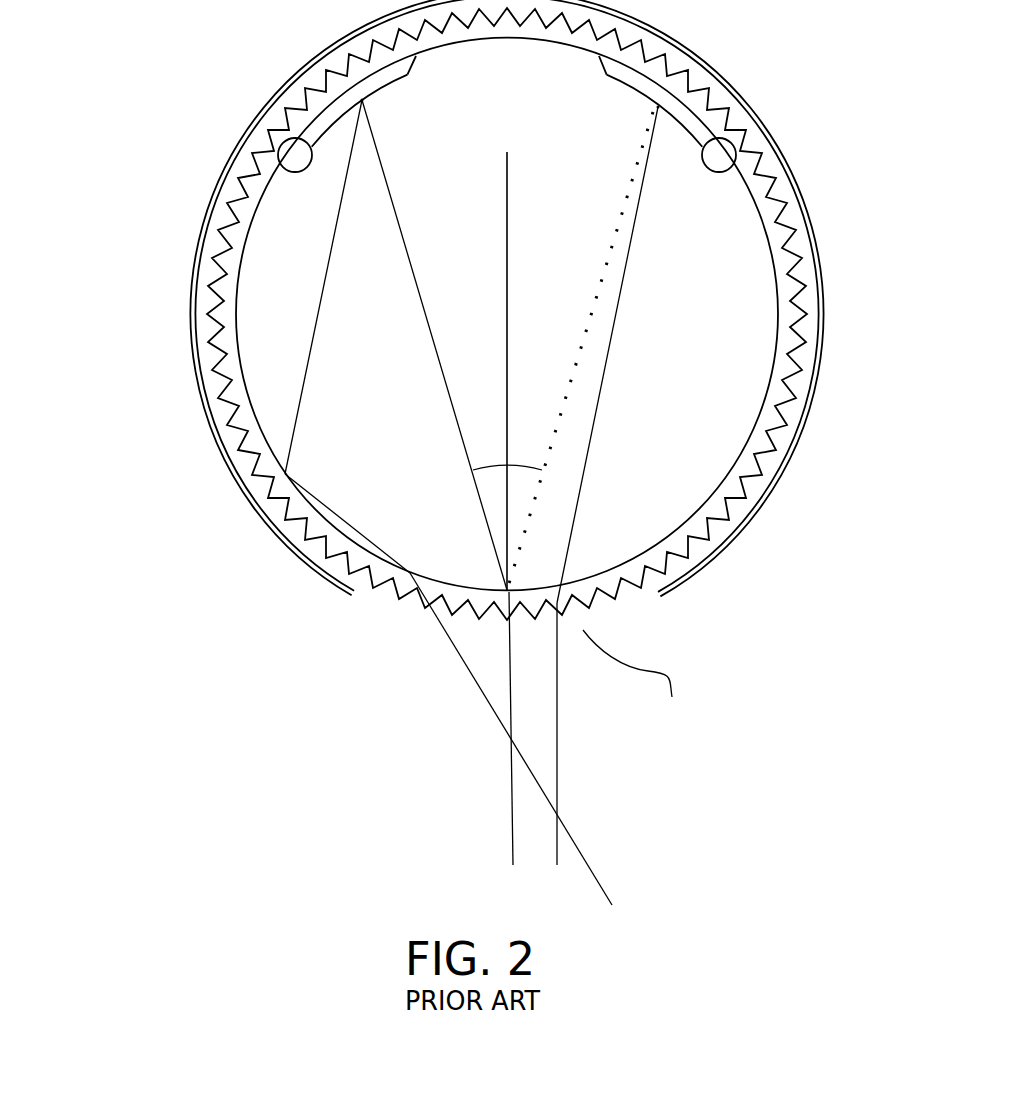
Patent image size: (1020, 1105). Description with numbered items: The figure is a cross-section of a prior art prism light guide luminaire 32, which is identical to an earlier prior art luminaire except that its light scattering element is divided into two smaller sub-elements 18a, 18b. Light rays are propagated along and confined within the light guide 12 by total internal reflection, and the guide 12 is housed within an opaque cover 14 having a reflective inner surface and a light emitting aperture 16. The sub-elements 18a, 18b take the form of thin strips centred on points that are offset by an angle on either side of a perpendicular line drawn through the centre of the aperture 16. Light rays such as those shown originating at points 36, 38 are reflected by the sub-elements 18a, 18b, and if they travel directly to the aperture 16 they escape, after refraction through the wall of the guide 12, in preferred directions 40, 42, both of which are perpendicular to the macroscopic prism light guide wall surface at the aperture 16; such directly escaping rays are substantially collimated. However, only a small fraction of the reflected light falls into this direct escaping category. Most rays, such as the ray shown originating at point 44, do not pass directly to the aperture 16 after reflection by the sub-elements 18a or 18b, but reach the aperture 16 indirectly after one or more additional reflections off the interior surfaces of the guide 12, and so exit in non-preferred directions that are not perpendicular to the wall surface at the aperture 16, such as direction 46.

The light guide 12 is at (760, 178).
The opaque cover 14 is at (822, 307).
The light emitting aperture 16 is at (639, 679).
The light scattering sub-element 18a is at (282, 172).
The light scattering sub-element 18b is at (736, 175).
The prior art luminaire 32 is at (152, 522).
The light ray origin point 36 is at (362, 100).
The light ray origin point 38 is at (658, 107).
The preferred direction 40 is at (511, 748).
The preferred direction 42 is at (600, 507).
The light ray origin point 44 is at (362, 100).
The non-preferred direction 46 is at (528, 760).